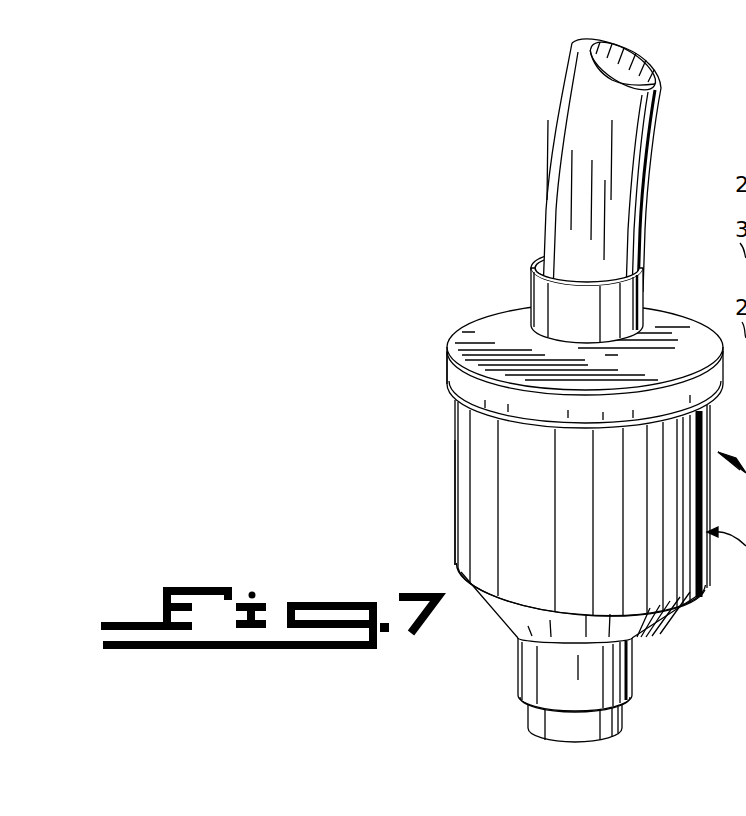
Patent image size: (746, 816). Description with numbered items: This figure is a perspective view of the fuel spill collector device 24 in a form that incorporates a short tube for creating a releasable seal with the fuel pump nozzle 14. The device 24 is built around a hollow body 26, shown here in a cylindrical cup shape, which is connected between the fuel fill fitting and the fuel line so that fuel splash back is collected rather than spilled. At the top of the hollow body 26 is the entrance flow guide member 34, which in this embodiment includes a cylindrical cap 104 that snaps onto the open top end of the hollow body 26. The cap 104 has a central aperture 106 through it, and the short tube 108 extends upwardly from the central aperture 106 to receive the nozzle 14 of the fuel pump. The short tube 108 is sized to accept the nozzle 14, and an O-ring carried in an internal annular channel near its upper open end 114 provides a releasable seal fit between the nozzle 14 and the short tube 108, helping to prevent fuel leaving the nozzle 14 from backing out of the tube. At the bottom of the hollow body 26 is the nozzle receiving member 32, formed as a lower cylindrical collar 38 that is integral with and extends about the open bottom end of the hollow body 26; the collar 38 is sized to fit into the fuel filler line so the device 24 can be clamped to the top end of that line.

The nozzle 14 is at (563, 133).
The fuel spill collector device 24 is at (424, 463).
The hollow body 26 is at (454, 522).
The nozzle receiving member 32 is at (630, 678).
The entrance flow guide member 34 is at (496, 302).
The lower cylindrical collar 38 is at (540, 676).
The cylindrical cap 104 is at (446, 366).
The central aperture 106 is at (656, 323).
The short tube 108 is at (537, 282).
The upper open end 114 is at (640, 265).